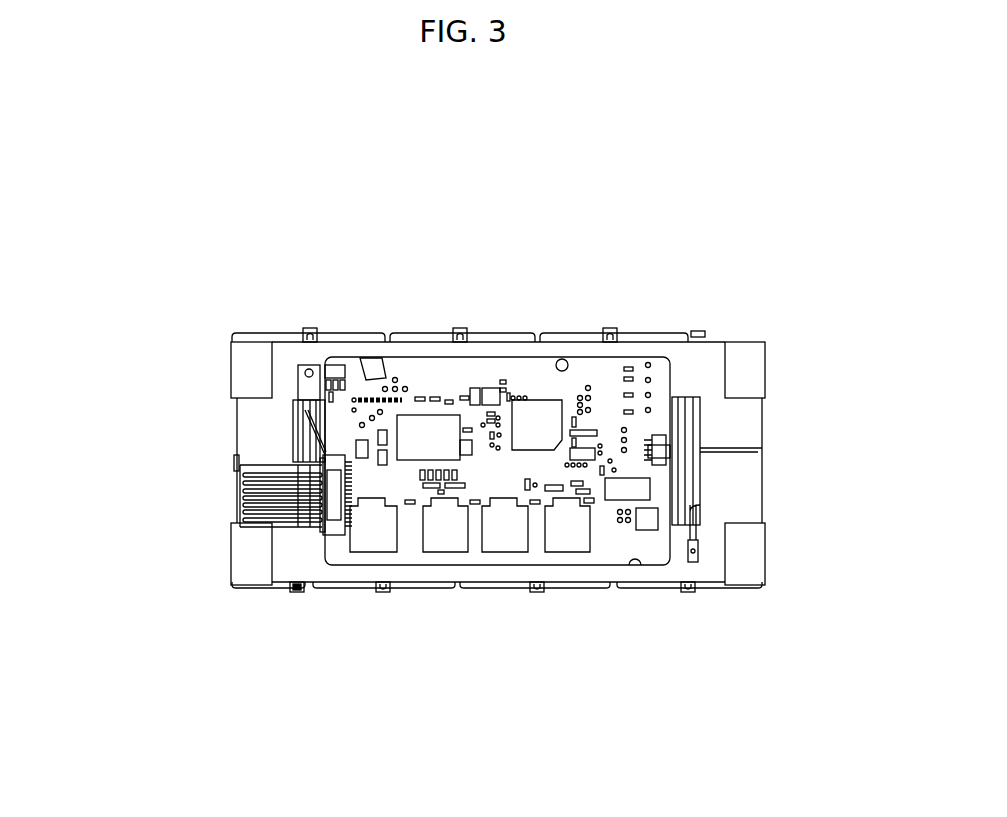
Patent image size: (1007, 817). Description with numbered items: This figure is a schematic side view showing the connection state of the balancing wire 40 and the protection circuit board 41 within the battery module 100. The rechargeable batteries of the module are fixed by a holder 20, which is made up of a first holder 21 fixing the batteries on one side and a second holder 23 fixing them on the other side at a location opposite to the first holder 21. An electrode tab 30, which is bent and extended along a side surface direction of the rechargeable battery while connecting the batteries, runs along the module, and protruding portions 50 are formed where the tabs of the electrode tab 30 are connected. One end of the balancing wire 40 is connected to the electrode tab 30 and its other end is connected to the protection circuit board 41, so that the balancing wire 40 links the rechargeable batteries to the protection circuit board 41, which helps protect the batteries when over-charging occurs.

The battery module 100 is at (657, 205).
The holder 20 is at (153, 404).
The first holder 21 is at (243, 373).
The second holder 23 is at (243, 553).
The electrode tab 30 is at (268, 333).
The balancing wire 40 is at (262, 505).
The protection circuit board 41 is at (408, 540).
The protruding portion 50 is at (310, 327).